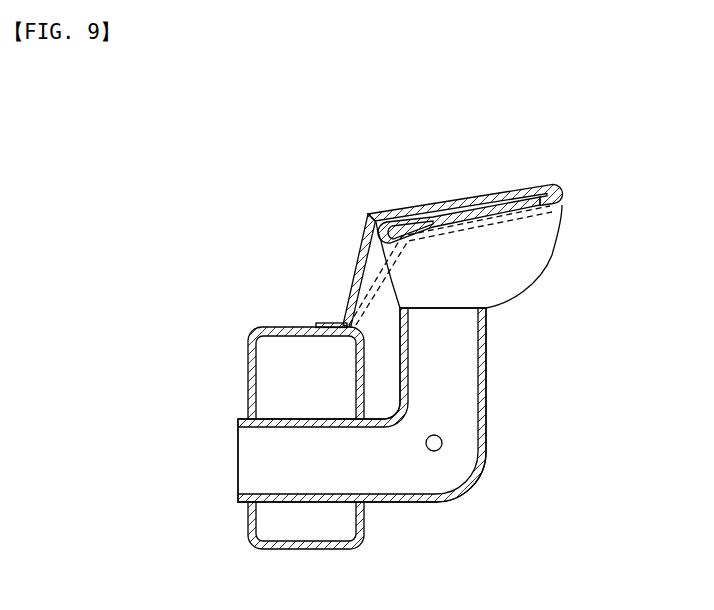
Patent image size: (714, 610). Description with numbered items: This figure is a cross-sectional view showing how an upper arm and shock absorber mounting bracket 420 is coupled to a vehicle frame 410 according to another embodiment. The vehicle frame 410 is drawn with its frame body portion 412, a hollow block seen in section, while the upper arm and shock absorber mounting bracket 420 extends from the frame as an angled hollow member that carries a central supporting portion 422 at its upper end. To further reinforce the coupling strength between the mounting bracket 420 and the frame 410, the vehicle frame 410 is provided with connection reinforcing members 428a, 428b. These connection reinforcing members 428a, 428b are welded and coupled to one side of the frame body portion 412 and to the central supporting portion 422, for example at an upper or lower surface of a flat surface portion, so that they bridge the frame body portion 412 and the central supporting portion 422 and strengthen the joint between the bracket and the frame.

The vehicle frame 410 is at (264, 380).
The frame body portion 412 is at (248, 360).
The upper arm and shock absorber mounting bracket 420 is at (514, 362).
The central supporting portion 422 is at (531, 190).
The connection reinforcing member 428a is at (378, 236).
The connection reinforcing member 428b is at (353, 242).